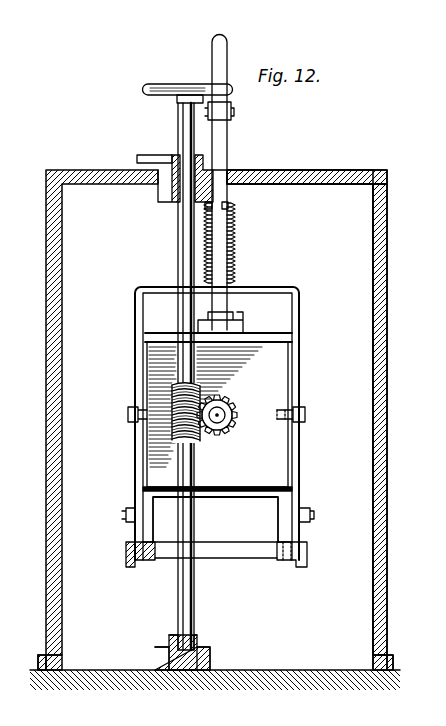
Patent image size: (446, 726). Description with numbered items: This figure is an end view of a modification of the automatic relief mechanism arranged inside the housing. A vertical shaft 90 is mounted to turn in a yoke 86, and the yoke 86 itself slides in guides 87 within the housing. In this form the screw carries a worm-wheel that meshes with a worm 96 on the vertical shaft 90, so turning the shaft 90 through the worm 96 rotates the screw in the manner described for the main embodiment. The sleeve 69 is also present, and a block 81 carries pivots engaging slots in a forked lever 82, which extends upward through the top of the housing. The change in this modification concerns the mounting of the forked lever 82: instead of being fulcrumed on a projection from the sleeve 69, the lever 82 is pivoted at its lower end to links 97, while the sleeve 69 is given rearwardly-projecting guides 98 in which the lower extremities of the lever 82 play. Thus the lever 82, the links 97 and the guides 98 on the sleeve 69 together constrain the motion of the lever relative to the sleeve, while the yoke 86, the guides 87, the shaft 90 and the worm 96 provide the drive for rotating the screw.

The sleeve 69 is at (238, 492).
The block 81 is at (217, 416).
The forked lever 82 is at (300, 308).
The yoke 86 is at (197, 640).
The guides 87 is at (210, 655).
The vertical shaft 90 is at (196, 588).
The worm 96 is at (198, 440).
The links 97 is at (320, 505).
The rearwardly-projecting guides 98 is at (320, 552).